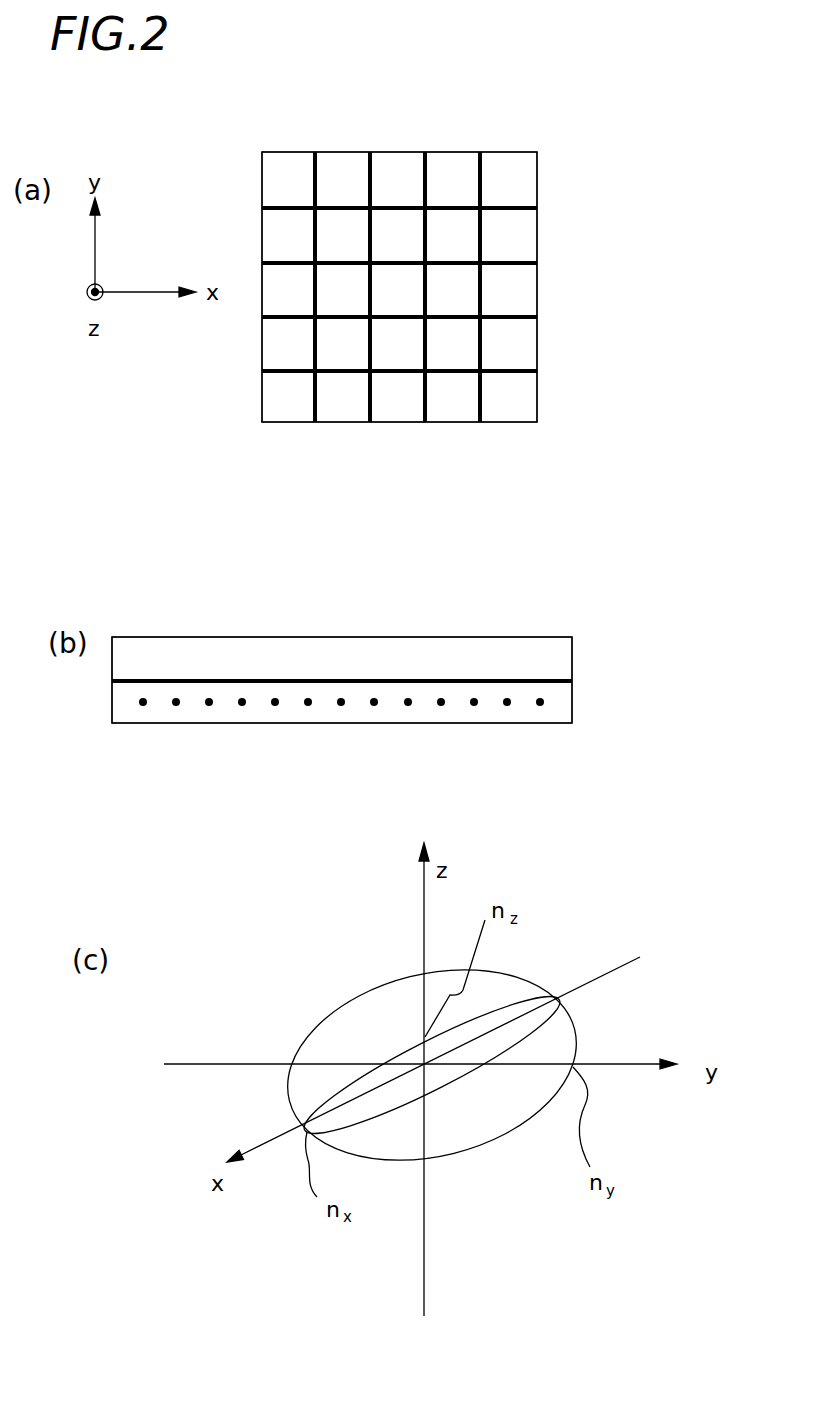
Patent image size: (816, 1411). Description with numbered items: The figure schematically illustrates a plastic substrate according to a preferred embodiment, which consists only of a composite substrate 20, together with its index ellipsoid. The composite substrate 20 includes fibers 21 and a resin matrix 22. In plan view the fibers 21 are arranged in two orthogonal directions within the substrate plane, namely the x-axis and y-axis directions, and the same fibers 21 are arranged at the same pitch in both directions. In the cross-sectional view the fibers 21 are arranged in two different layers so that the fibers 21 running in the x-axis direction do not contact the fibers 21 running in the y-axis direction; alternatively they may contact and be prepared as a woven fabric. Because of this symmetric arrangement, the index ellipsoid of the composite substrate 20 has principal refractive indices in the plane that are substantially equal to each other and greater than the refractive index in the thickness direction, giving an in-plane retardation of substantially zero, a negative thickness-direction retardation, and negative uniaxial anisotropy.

The composite substrate 20 is at (645, 117).
The fibers 21 is at (483, 172).
The resin matrix 22 is at (527, 182).